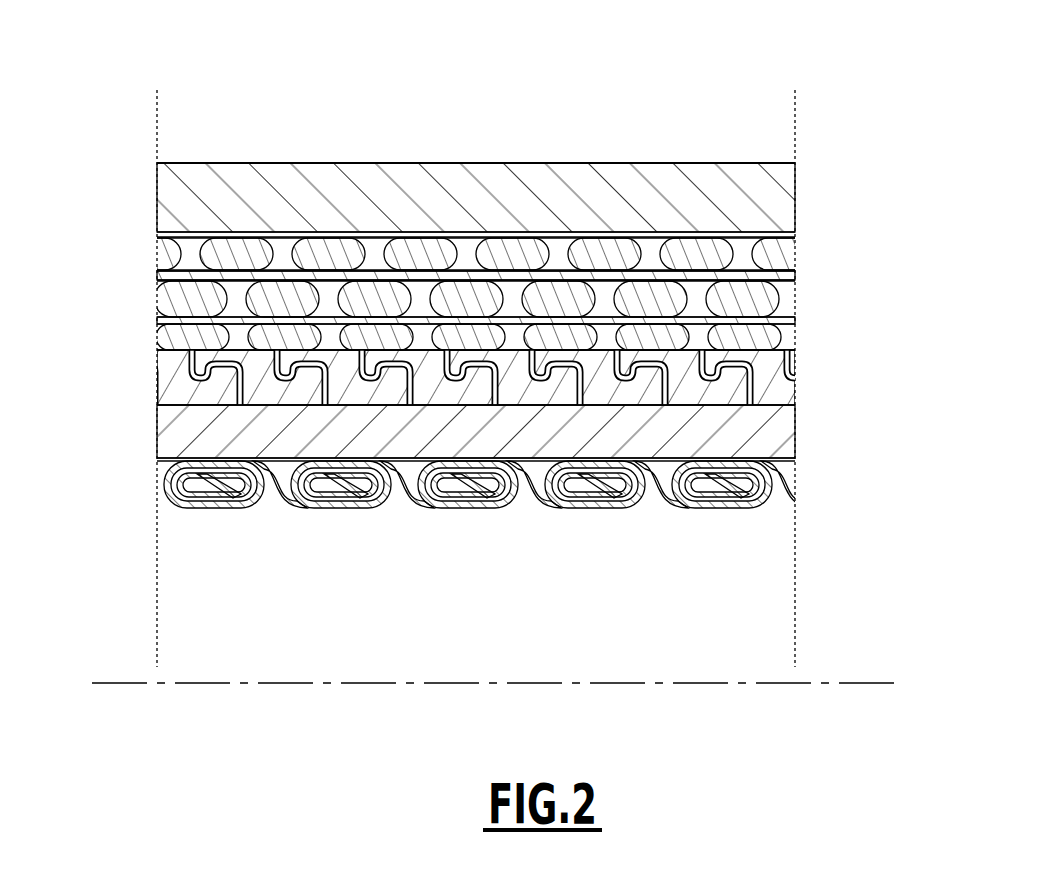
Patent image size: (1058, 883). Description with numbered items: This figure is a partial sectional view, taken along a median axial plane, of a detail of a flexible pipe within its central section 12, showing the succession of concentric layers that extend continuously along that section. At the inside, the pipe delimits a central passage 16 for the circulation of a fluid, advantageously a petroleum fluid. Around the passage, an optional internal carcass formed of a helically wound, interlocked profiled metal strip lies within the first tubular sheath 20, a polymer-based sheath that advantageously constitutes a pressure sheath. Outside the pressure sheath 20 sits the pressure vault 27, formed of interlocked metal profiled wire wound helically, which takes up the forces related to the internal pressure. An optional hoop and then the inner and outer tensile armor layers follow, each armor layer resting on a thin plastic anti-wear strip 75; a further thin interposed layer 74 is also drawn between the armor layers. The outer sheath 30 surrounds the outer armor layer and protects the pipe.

The central section 12 is at (868, 136).
The outer sheath 30 is at (600, 200).
The anti-wear strip 75 is at (157, 278).
The second binder layer 74 is at (722, 252).
The pressure vault 27 is at (118, 378).
The first tubular sheath 20 is at (828, 434).
The central passage 16 is at (493, 627).